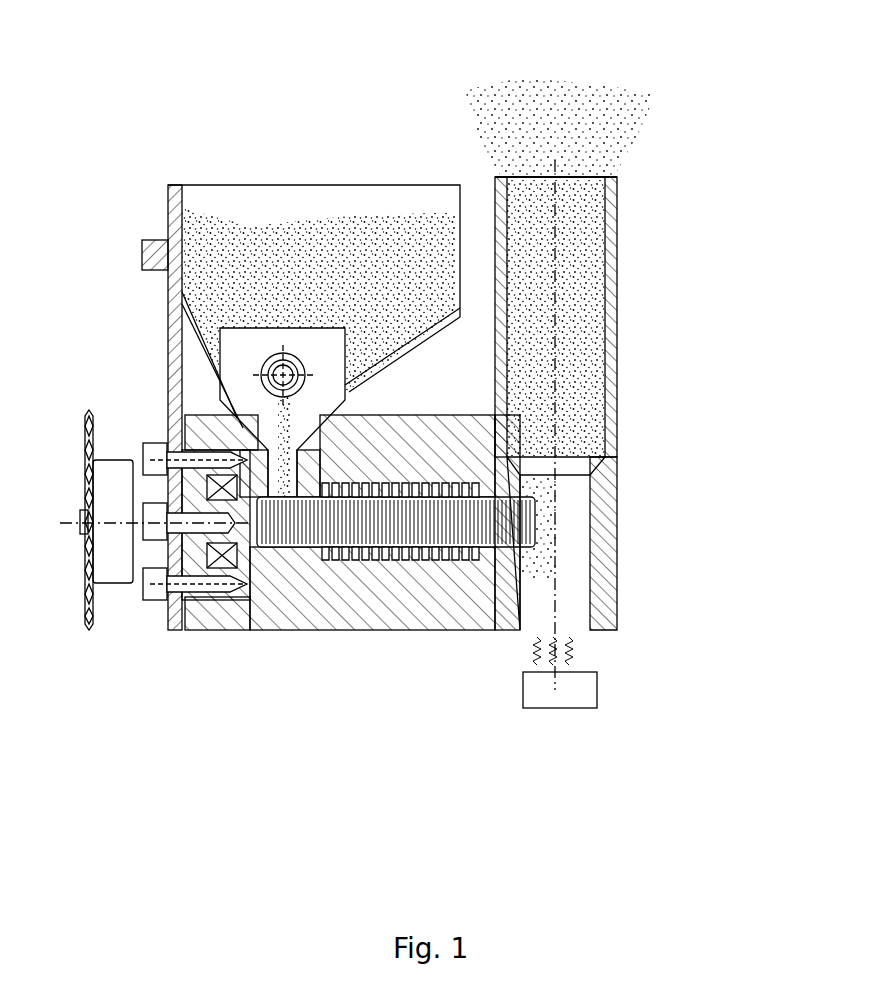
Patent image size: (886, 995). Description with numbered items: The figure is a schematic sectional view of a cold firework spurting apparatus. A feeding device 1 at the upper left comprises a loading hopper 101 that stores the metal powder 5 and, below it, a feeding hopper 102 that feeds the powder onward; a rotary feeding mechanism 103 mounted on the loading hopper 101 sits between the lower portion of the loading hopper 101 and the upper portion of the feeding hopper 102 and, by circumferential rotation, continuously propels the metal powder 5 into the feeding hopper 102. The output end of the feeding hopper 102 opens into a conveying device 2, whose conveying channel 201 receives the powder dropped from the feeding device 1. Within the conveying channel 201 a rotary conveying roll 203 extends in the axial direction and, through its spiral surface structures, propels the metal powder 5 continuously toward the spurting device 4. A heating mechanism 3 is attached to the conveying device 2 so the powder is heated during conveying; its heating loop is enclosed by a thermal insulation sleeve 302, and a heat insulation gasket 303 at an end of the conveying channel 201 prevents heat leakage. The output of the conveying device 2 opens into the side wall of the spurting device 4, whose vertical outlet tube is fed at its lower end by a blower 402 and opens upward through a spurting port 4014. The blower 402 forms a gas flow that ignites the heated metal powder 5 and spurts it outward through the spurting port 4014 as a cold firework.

The feeding device 1 is at (283, 165).
The loading hopper 101 is at (240, 187).
The feeding hopper 102 is at (232, 398).
The rotary feeding mechanism 103 is at (262, 368).
The conveying device 2 is at (257, 612).
The conveying channel 201 is at (513, 603).
The rotary conveying roll 203 is at (305, 600).
The heating mechanism 3 is at (398, 598).
The thermal insulation sleeve 302 is at (348, 605).
The heat insulation gasket 303 is at (193, 628).
The spurting device 4 is at (600, 545).
The spurting port 4014 is at (597, 172).
The blower 402 is at (580, 692).
The metal powder 5 is at (383, 235).